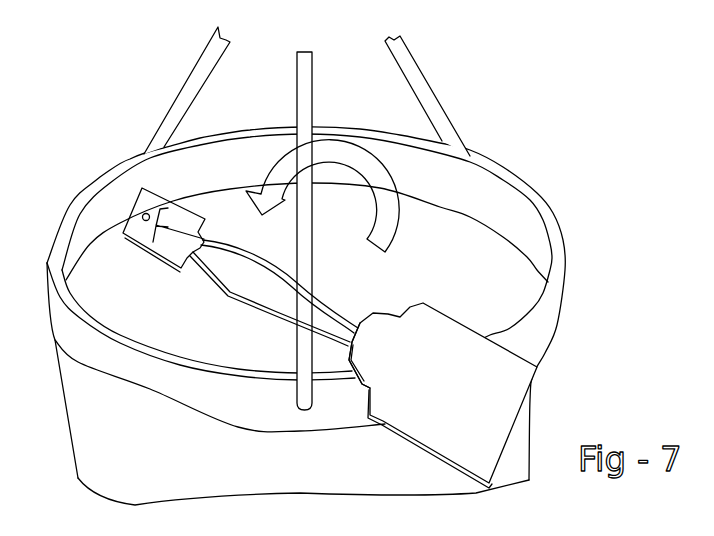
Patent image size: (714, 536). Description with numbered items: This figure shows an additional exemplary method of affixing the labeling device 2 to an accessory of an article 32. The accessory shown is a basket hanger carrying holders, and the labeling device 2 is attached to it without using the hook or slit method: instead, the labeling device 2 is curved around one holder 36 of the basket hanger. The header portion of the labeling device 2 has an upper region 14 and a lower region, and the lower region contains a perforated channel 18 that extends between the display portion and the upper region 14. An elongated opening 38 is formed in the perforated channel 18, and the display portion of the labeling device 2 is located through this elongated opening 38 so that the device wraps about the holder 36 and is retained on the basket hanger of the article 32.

The labeling device 2 is at (521, 406).
The upper region 14 is at (130, 171).
The perforated channel 18 is at (344, 302).
The article 32 is at (67, 435).
The holder 36 is at (209, 93).
The elongated opening 38 is at (217, 270).